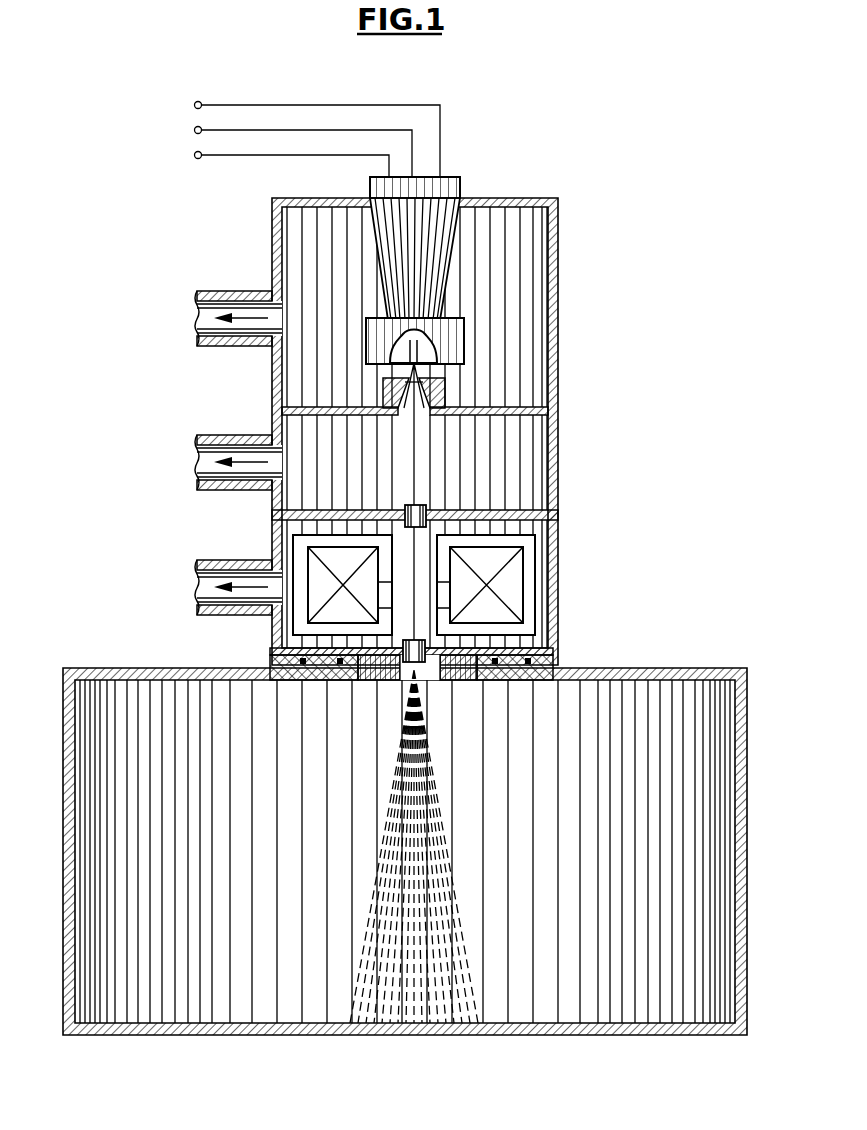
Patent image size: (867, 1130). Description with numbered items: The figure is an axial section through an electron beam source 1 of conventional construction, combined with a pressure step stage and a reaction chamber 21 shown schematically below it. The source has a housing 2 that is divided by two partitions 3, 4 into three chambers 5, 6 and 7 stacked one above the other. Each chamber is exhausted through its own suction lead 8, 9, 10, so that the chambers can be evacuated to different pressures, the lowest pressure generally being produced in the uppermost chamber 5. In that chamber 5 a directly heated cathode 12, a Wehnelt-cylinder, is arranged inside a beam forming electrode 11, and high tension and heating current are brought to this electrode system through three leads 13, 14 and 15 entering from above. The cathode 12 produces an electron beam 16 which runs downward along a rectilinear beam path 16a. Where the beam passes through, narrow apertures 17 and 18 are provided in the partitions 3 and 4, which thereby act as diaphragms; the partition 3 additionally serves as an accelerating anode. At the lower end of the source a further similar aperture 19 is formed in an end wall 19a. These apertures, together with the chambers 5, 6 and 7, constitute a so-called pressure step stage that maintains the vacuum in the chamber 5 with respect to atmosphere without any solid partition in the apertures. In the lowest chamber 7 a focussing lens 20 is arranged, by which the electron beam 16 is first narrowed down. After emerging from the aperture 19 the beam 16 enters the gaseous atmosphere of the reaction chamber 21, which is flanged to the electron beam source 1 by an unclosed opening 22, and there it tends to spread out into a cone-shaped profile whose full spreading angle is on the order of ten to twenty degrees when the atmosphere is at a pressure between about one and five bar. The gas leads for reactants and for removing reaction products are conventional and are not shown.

The electron beam source 1 is at (585, 287).
The housing 2 is at (559, 368).
The partition 3 is at (530, 417).
The partition 4 is at (522, 509).
The chamber 5 is at (540, 233).
The chamber 6 is at (540, 465).
The chamber 7 is at (540, 585).
The suction lead 8 is at (198, 333).
The suction lead 9 is at (198, 473).
The suction lead 10 is at (198, 595).
The beam forming electrode 11 is at (450, 340).
The directly heated cathode 12 is at (405, 370).
The lead 13 is at (228, 105).
The lead 14 is at (205, 130).
The lead 15 is at (228, 155).
The electron beam 16 is at (414, 465).
The beam path 16a is at (400, 446).
The aperture 17 is at (403, 415).
The aperture 18 is at (425, 493).
The aperture 19 is at (402, 672).
The end wall 19a is at (365, 681).
The focussing lens 20 is at (510, 568).
The reaction chamber 21 is at (238, 1037).
The unclosed opening 22 is at (462, 681).